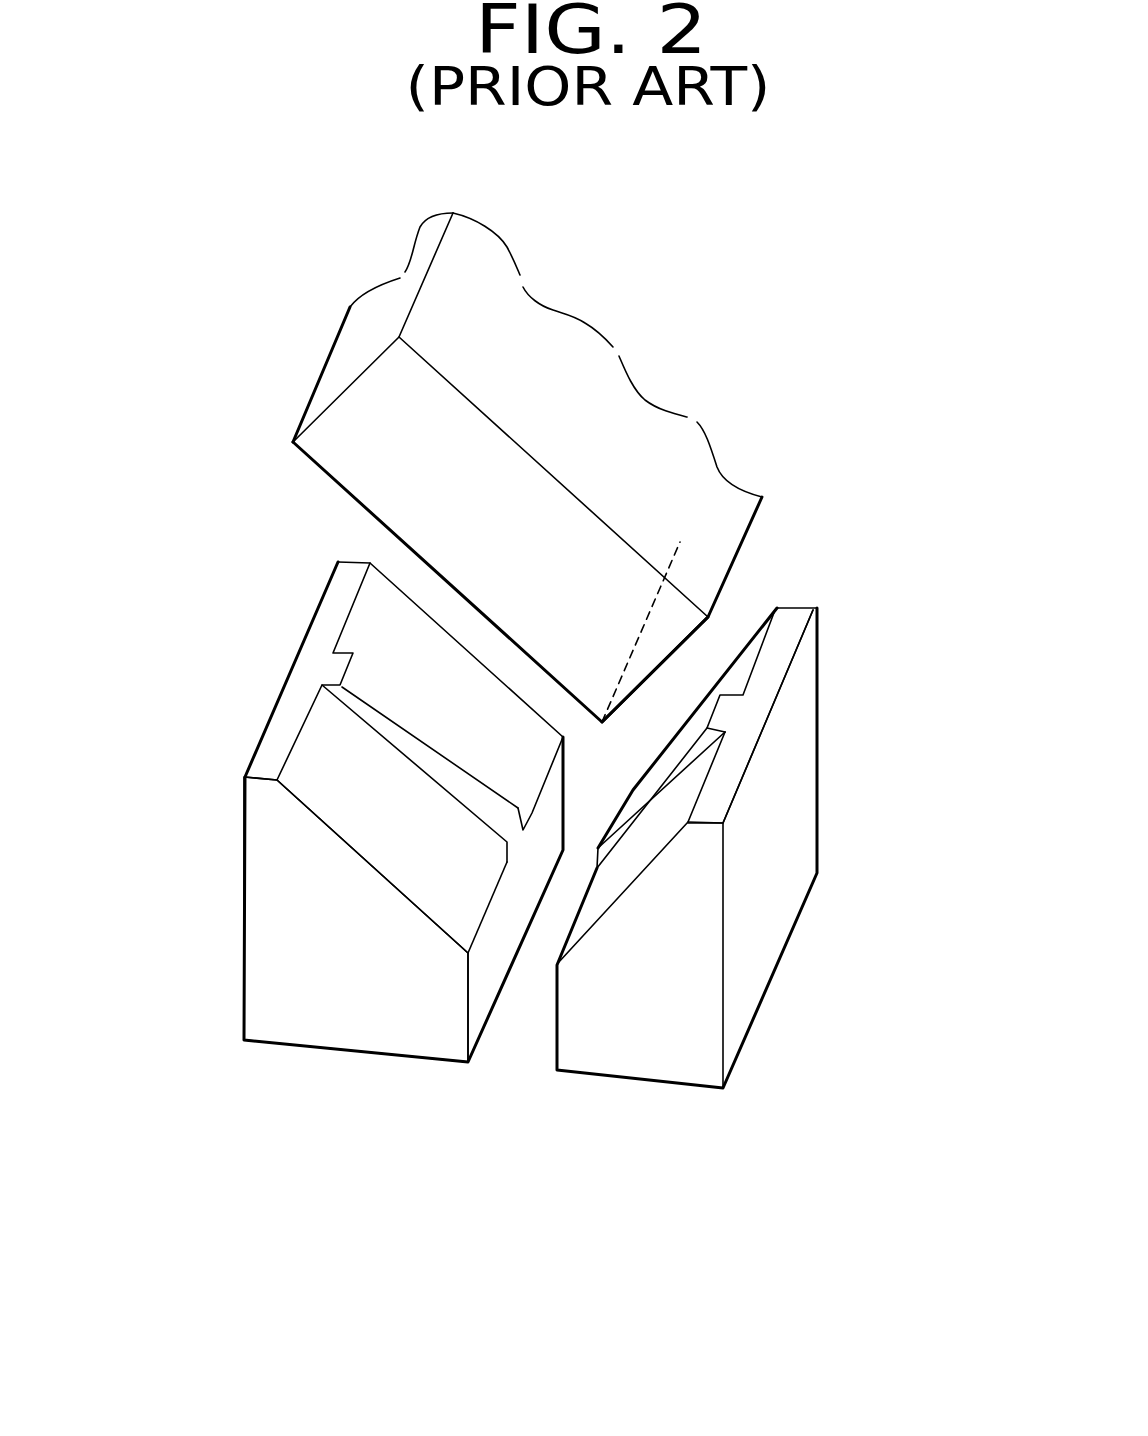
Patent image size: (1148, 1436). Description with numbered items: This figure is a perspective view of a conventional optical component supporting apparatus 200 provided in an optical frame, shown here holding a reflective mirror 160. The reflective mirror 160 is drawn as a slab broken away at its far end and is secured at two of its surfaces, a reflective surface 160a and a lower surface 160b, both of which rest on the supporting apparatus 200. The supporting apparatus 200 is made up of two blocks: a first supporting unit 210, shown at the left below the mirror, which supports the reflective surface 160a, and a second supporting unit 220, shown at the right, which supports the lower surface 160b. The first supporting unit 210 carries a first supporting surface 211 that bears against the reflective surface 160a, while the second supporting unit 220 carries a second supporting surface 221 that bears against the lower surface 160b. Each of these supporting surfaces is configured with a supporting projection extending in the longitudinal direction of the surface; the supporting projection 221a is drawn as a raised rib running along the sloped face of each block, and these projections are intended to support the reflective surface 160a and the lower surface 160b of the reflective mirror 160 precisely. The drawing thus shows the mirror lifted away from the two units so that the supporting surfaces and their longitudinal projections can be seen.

The reflective mirror 160 is at (580, 372).
The reflective surface 160a is at (311, 402).
The lower surface 160b is at (686, 676).
The supporting apparatus 200 is at (328, 1222).
The first supporting unit 210 is at (365, 1030).
The first supporting surface 211 is at (347, 807).
The second supporting unit 220 is at (647, 1060).
The second supporting surface 221 is at (742, 660).
The supporting projection 221a is at (368, 685).